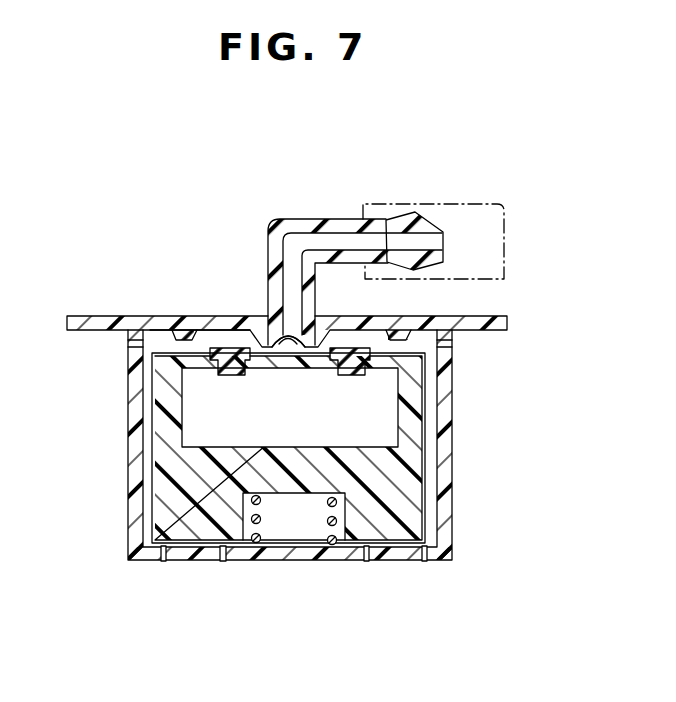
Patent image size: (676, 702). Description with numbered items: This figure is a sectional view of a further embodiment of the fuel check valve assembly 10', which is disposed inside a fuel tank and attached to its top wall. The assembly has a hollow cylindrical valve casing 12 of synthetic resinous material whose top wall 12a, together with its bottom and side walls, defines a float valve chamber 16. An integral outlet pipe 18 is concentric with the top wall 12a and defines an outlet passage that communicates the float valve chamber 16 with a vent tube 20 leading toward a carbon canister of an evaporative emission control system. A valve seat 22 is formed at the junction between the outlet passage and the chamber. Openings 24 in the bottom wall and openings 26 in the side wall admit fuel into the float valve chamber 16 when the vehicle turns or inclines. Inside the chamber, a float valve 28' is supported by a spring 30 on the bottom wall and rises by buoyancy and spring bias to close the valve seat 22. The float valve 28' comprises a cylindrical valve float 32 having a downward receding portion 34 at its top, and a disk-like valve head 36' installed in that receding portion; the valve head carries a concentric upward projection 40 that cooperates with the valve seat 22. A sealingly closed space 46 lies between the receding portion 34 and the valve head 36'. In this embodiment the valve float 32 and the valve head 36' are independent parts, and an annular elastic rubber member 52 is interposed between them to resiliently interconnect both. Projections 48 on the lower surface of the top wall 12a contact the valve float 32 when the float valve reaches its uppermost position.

The check valve assembly 10' is at (398, 137).
The valve casing 12 is at (140, 316).
The top wall 12a is at (213, 318).
The float valve chamber 16 is at (150, 430).
The outlet pipe 18 is at (424, 218).
The vent tube 20 is at (483, 280).
The valve seat 22 is at (270, 318).
The openings 24 is at (221, 561).
The openings 26 is at (128, 342).
The float valve 28' is at (332, 445).
The spring 30 is at (328, 526).
The valve float 32 is at (418, 478).
The receding portion 34 is at (190, 400).
The valve head 36' is at (394, 382).
The upward projection 40 is at (313, 328).
The space 46 is at (284, 432).
The projections 48 is at (193, 332).
The elastic rubber member 52 is at (353, 353).